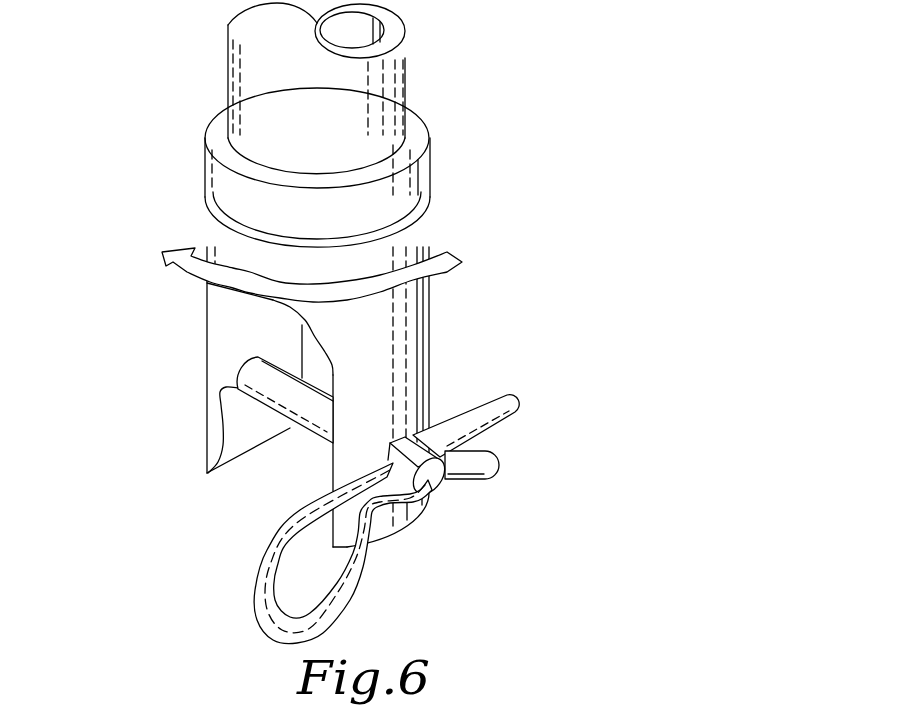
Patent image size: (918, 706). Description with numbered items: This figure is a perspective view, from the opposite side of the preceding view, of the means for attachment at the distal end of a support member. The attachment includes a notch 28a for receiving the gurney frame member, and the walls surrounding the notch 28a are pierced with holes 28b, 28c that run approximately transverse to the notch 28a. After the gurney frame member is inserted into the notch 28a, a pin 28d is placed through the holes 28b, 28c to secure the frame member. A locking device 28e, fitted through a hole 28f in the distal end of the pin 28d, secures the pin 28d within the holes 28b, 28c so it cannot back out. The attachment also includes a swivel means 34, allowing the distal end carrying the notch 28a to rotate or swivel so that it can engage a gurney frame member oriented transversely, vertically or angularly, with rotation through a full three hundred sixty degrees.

The notch 28a is at (280, 483).
The hole 28b is at (390, 443).
The hole 28c is at (240, 455).
The pin 28d is at (257, 373).
The locking device 28e is at (403, 442).
The hole 28f is at (365, 594).
The swivel means 34 is at (258, 164).